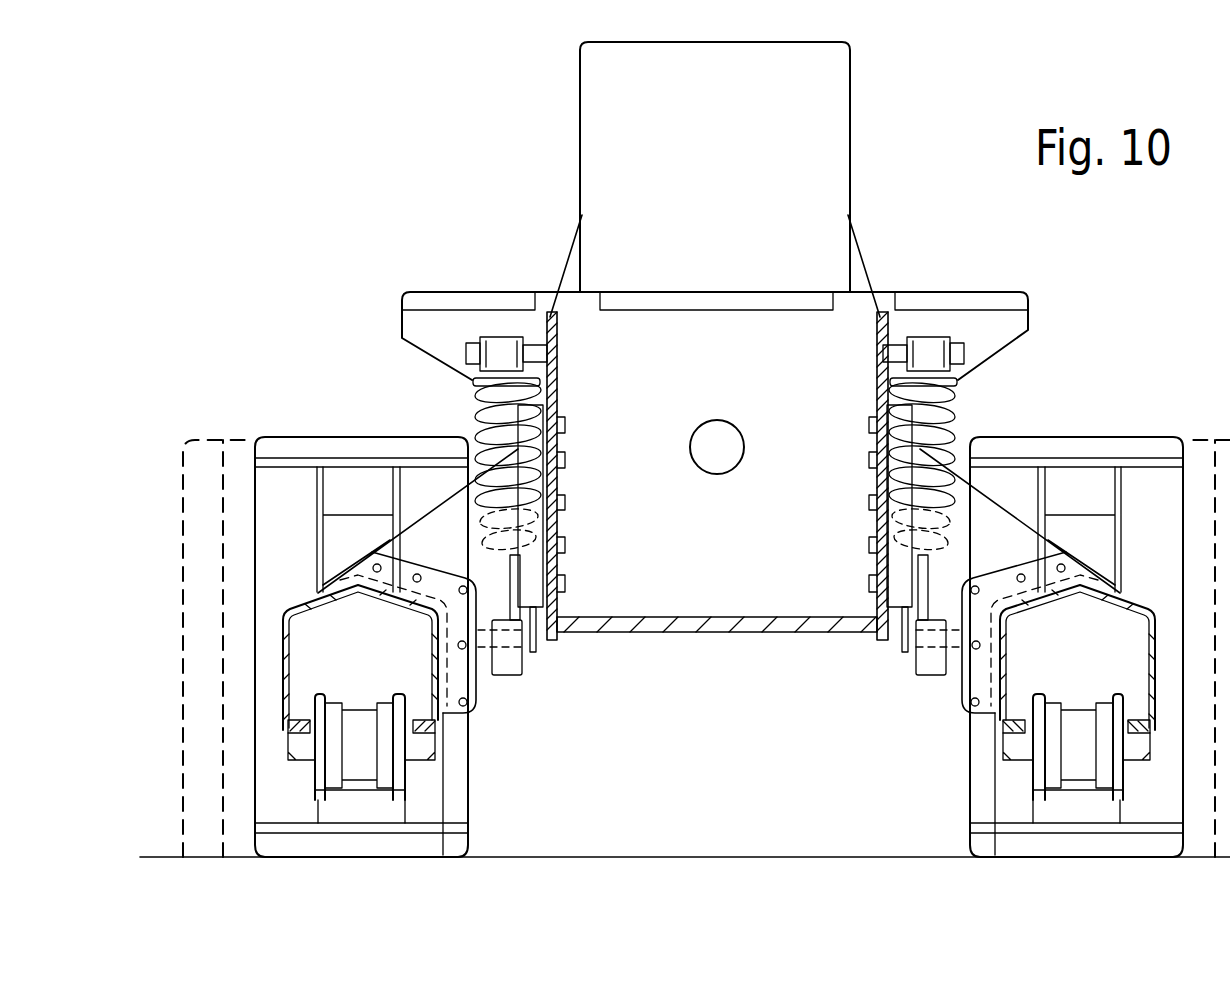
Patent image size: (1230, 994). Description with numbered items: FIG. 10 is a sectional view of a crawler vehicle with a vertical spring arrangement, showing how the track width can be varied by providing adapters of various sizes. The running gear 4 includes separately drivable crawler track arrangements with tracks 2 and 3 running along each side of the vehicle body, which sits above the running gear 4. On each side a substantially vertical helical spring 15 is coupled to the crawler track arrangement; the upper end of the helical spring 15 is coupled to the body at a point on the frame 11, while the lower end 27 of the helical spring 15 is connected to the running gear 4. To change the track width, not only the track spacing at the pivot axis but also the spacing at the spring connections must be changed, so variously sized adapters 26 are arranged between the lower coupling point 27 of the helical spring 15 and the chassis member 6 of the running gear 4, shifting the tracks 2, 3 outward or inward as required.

The track 2 is at (1130, 435).
The track 3 is at (305, 452).
The running gear 4 is at (200, 579).
The chassis member 6 is at (470, 667).
The frame 11 is at (882, 380).
The helical spring 15 is at (550, 395).
The adapter 26 is at (450, 680).
The lower end 27 is at (508, 638).